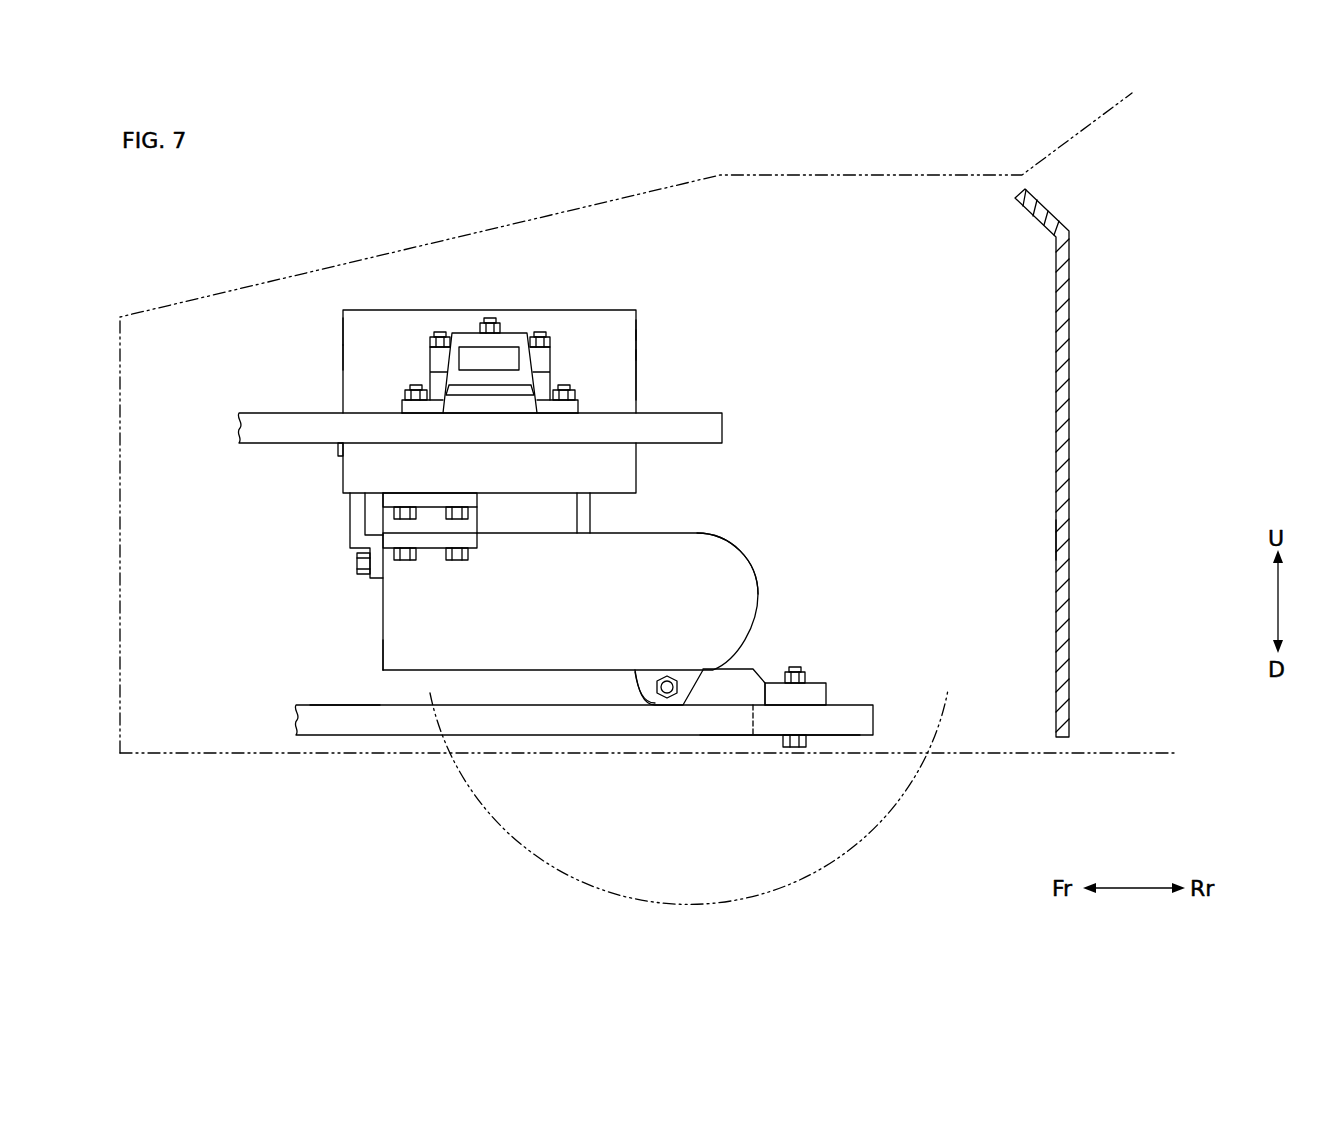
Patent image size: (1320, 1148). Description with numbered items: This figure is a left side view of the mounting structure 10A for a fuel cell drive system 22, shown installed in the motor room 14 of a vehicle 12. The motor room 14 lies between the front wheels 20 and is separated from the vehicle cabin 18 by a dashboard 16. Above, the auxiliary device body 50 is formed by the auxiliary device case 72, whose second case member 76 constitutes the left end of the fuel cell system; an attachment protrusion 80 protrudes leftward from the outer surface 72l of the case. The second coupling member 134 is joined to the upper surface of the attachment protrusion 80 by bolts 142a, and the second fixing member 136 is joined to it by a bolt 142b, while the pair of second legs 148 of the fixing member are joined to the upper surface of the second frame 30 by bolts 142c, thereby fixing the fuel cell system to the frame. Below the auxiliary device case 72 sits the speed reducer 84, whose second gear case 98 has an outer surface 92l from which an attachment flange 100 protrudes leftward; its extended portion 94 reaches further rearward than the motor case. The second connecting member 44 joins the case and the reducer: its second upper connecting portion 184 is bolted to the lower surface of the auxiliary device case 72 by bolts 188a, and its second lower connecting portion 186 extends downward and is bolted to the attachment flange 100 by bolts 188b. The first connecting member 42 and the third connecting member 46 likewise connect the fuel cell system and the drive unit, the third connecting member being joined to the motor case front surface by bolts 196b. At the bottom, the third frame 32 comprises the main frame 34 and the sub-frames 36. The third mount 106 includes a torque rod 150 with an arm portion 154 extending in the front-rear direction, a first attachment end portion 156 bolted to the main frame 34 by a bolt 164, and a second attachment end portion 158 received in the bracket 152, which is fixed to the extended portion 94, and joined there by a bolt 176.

The mounting structure 10A is at (618, 254).
The vehicle 12 is at (623, 195).
The motor room 14 is at (1023, 599).
The dashboard 16 is at (1067, 540).
The vehicle cabin 18 is at (1120, 707).
The front wheels 20 is at (478, 800).
The fuel cell drive system 22 is at (617, 299).
The second frame 30 is at (260, 422).
The third frame 32 is at (282, 709).
The main frame 34 is at (843, 740).
The sub-frames 36 is at (345, 722).
The first connecting member 42 is at (590, 512).
The second connecting member 44 is at (392, 486).
The third connecting member 46 is at (350, 520).
The auxiliary device body 50 is at (648, 315).
The auxiliary device case 72 is at (343, 332).
The outer surface of the auxiliary device case 72l is at (343, 348).
The second case member 76 is at (636, 340).
The attachment protrusion 80 is at (547, 378).
The speed reducer 84 is at (372, 637).
The outer surface of the speed reducer case 92l is at (398, 650).
The extended portion 94 is at (725, 540).
The second gear case 98 is at (383, 612).
The attachment flange 100 is at (472, 540).
The third mount 106 is at (763, 772).
The second coupling member 134 is at (553, 355).
The second fixing member 136 is at (513, 340).
The bolts 142a is at (442, 335).
The bolt 142b is at (491, 320).
The bolts 142c is at (414, 388).
The second legs 148 is at (418, 420).
The torque rod 150 is at (820, 668).
The bracket 152 is at (685, 675).
The arm portion 154 is at (750, 688).
The first attachment end portion 156 is at (820, 692).
The second attachment end portion 158 is at (630, 690).
The bolt 164 is at (793, 748).
The bolt 176 is at (667, 700).
The second upper connecting portion 184 is at (473, 497).
The second lower connecting portion 186 is at (395, 527).
The bolts 188a is at (457, 507).
The bolts 188b is at (405, 560).
The bolts 196b is at (357, 562).